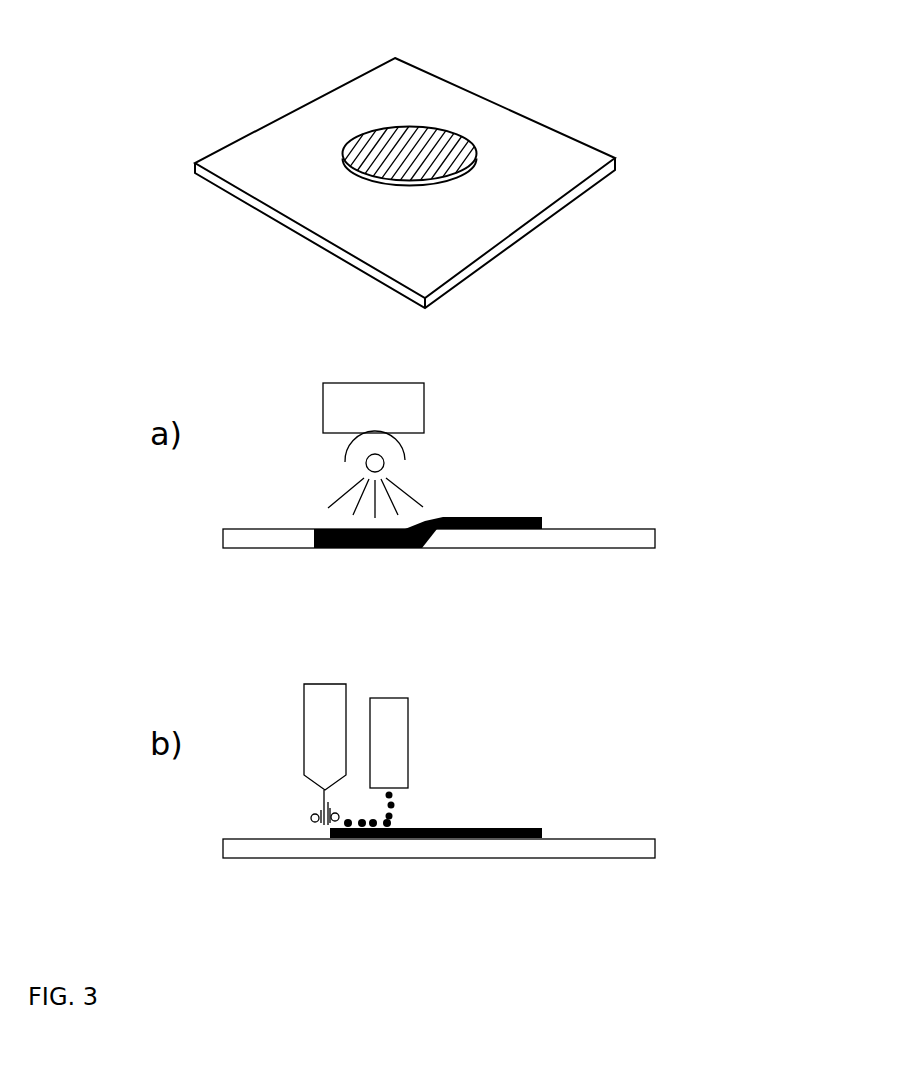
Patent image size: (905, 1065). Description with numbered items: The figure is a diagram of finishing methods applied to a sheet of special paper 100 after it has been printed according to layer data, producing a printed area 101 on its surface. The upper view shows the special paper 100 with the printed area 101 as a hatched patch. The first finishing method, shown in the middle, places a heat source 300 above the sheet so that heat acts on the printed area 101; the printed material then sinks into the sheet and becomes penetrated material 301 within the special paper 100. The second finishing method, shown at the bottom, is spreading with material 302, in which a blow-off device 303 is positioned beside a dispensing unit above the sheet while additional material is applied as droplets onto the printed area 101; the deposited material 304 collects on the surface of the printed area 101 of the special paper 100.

The special paper 100 is at (564, 172).
The printed area 101 is at (425, 147).
The heat source 300 is at (416, 453).
The penetrated material 301 is at (435, 548).
The spreading with material 302 is at (407, 752).
The blow-off device 303 is at (325, 711).
The deposited droplets 304 is at (408, 818).